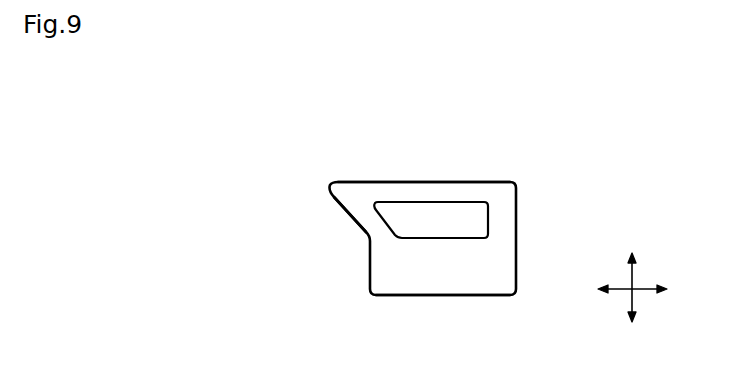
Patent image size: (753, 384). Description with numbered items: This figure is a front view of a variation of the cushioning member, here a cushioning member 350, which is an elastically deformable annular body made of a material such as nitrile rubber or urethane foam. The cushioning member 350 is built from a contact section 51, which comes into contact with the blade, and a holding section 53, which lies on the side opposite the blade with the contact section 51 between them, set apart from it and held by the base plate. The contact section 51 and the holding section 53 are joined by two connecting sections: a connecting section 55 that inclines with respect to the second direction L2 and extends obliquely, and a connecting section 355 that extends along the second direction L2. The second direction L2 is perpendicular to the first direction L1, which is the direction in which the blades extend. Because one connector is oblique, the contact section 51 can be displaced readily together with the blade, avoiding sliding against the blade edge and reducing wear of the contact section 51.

The cushioning member 350 is at (322, 149).
The contact section 51 is at (436, 195).
The holding section 53 is at (440, 268).
The connecting section 55 is at (370, 222).
The connecting section 355 is at (502, 218).
The first direction L1 is at (637, 290).
The second direction L2 is at (634, 282).